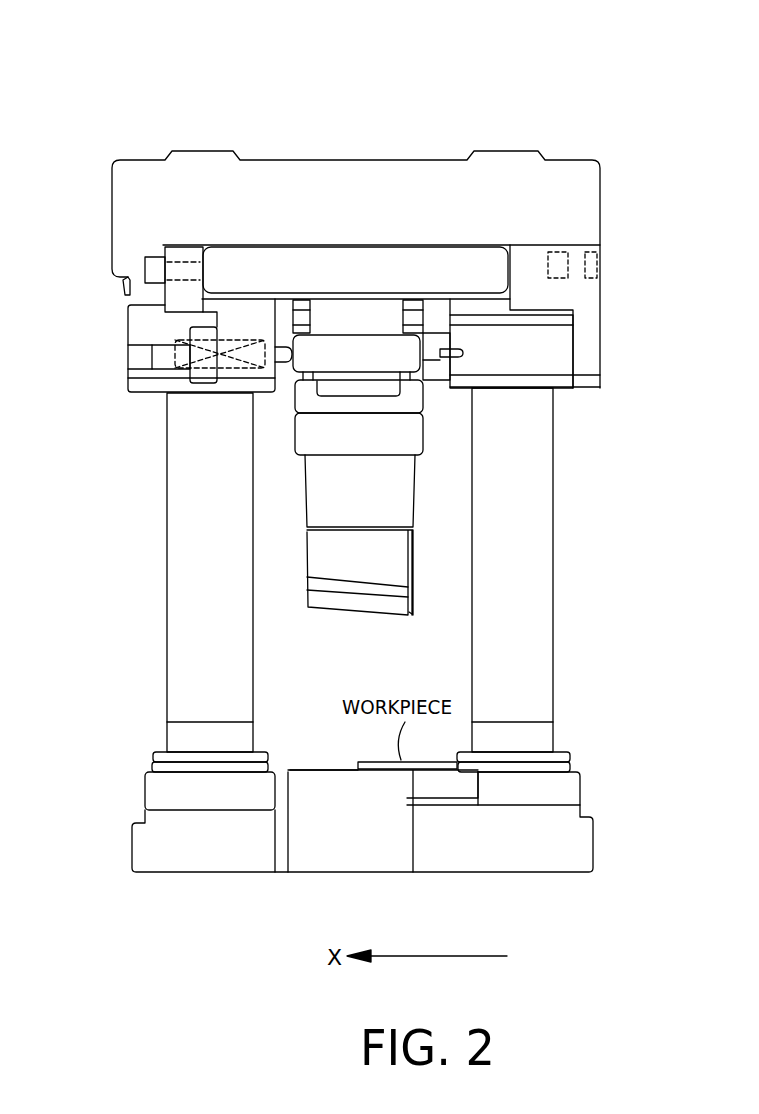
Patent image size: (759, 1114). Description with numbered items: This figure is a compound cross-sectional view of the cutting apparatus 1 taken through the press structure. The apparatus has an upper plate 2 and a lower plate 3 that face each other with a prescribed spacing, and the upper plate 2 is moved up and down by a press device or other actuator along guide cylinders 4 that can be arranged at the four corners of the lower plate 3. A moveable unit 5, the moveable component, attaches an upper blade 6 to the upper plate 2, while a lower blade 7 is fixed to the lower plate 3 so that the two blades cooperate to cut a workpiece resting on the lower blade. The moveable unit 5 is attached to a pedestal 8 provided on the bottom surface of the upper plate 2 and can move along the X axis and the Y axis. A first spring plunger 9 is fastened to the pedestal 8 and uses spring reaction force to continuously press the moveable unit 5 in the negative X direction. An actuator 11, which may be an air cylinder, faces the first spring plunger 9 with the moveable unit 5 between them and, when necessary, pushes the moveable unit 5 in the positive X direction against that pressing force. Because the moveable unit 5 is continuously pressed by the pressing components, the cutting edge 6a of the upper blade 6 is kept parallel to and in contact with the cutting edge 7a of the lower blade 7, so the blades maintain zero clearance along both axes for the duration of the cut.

The cutting apparatus 1 is at (93, 90).
The upper plate 2 is at (363, 158).
The lower plate 3 is at (180, 873).
The guide cylinders 4 is at (167, 620).
The moveable unit 5 is at (445, 432).
The upper blade 6 is at (413, 593).
The cutting edge of the upper blade 6a is at (413, 606).
The lower blade 7 is at (408, 782).
The cutting edge of the lower blade 7a is at (412, 773).
The pedestal 8 is at (418, 260).
The first spring plunger 9 is at (157, 358).
The actuator 11 is at (553, 355).